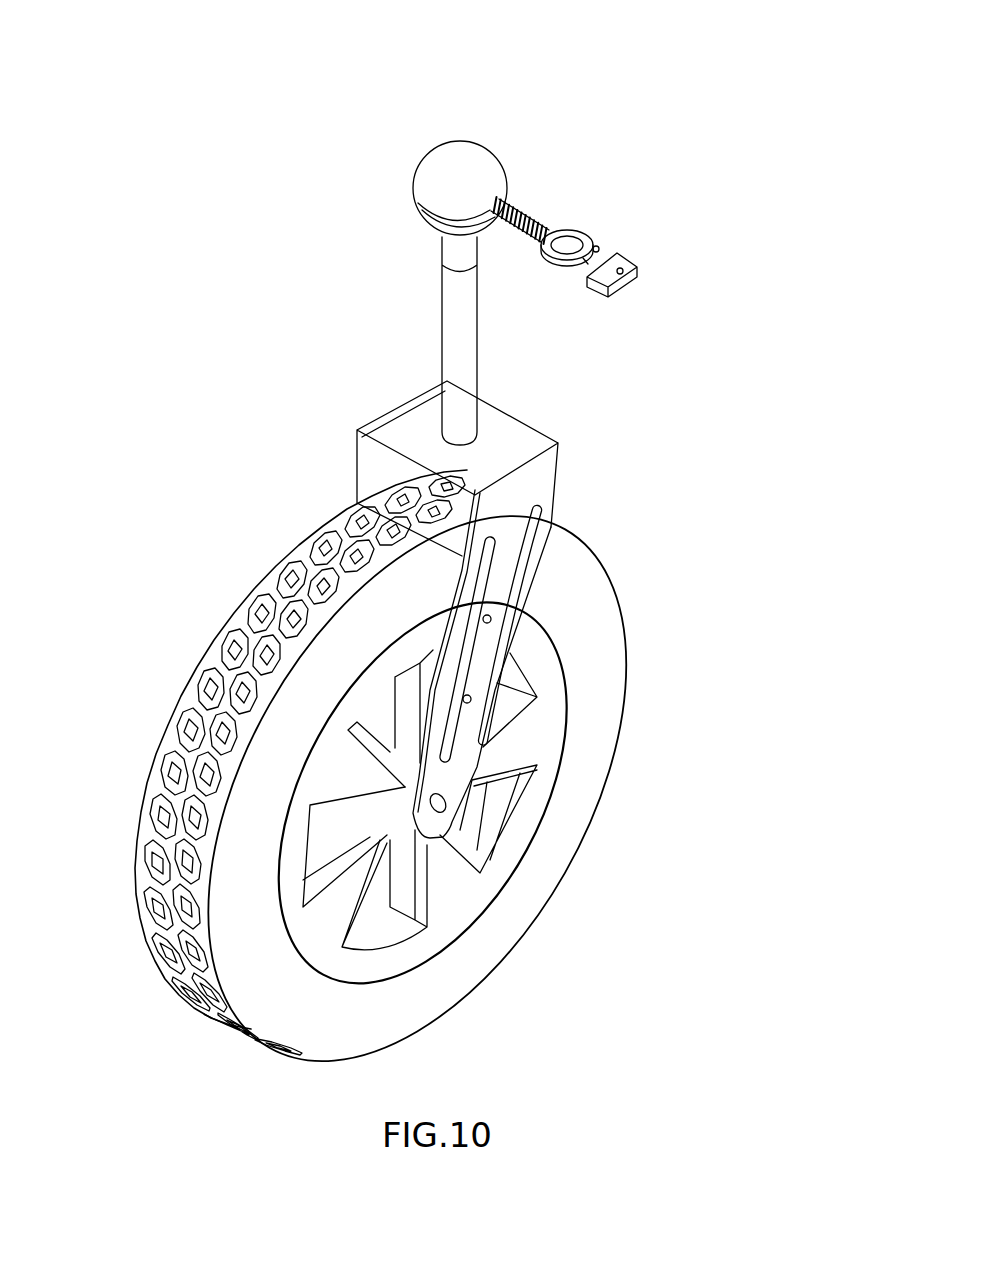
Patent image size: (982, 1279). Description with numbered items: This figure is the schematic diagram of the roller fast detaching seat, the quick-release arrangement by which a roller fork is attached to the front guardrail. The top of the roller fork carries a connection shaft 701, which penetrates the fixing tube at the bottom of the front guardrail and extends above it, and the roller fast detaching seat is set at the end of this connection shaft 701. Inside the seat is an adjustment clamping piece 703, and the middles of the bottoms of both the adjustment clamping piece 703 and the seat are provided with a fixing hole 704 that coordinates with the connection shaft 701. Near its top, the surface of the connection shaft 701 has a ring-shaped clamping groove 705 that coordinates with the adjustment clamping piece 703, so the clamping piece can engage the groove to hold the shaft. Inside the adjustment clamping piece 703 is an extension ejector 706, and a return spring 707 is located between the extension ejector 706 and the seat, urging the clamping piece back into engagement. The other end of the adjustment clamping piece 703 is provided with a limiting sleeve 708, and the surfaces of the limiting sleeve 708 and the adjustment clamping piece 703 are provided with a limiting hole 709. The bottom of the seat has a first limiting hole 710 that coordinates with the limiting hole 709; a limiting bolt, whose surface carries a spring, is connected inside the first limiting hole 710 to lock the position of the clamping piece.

The connection shaft 701 is at (463, 397).
The adjustment clamping piece 703 is at (600, 245).
The fixing hole 704 is at (567, 233).
The ring-shaped clamping groove 705 is at (443, 275).
The extension ejector 706 is at (550, 230).
The return spring 707 is at (503, 182).
The limiting sleeve 708 is at (610, 273).
The limiting hole 709 is at (633, 267).
The first limiting hole 710 is at (480, 203).